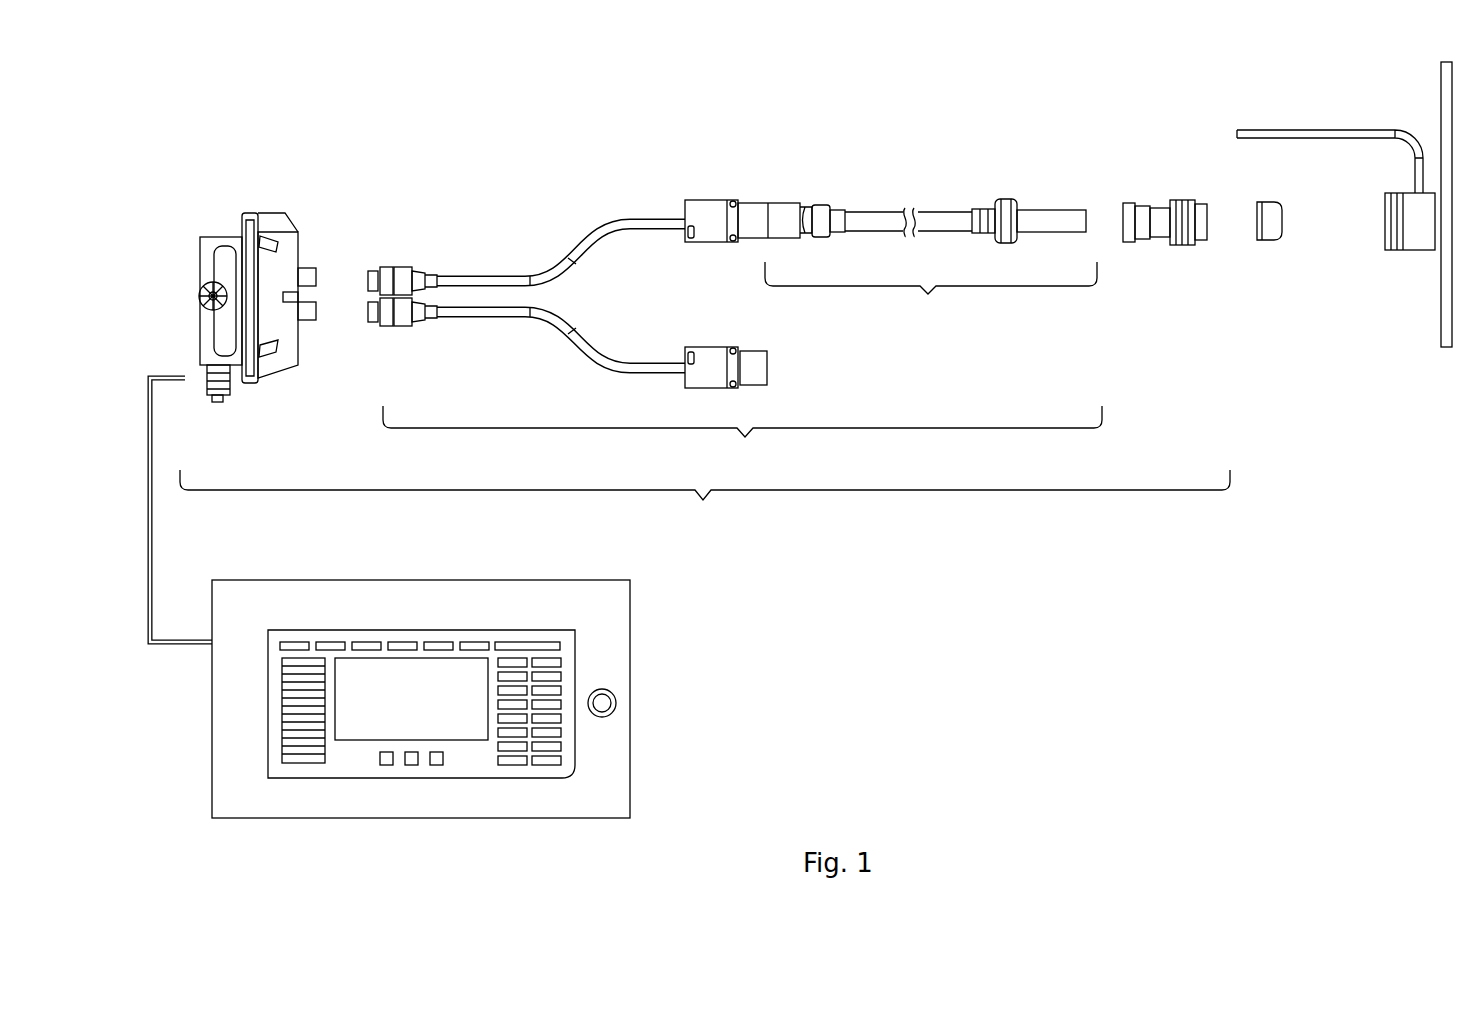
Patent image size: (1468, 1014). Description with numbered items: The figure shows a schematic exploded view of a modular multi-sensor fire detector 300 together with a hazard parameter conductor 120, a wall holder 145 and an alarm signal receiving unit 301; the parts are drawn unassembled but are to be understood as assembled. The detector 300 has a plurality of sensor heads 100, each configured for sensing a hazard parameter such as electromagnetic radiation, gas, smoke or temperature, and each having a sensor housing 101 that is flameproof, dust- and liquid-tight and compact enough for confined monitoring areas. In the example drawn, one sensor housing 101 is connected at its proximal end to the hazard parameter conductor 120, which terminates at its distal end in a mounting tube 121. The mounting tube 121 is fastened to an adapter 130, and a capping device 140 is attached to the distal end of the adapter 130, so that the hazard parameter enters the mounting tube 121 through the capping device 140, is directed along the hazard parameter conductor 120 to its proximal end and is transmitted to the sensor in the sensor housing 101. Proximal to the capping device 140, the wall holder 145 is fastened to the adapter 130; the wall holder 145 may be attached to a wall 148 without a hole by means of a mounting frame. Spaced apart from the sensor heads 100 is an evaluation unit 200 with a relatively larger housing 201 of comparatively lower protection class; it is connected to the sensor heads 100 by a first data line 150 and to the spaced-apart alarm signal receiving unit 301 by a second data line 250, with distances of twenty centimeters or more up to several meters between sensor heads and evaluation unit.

The sensor head 100 is at (742, 441).
The sensor housing 101 is at (705, 218).
The hazard parameter conductor 120 is at (917, 269).
The mounting tube 121 is at (1010, 198).
The adapter 130 is at (1160, 208).
The capping device 140 is at (1273, 233).
The wall holder 145 is at (1420, 218).
The wall 148 is at (1449, 327).
The first data line 150 is at (560, 236).
The evaluation unit 200 is at (263, 392).
The housing 201 is at (265, 262).
The second data line 250 is at (182, 642).
The modular multi-sensor fire detector 300 is at (705, 504).
The alarm signal receiving unit 301 is at (636, 703).